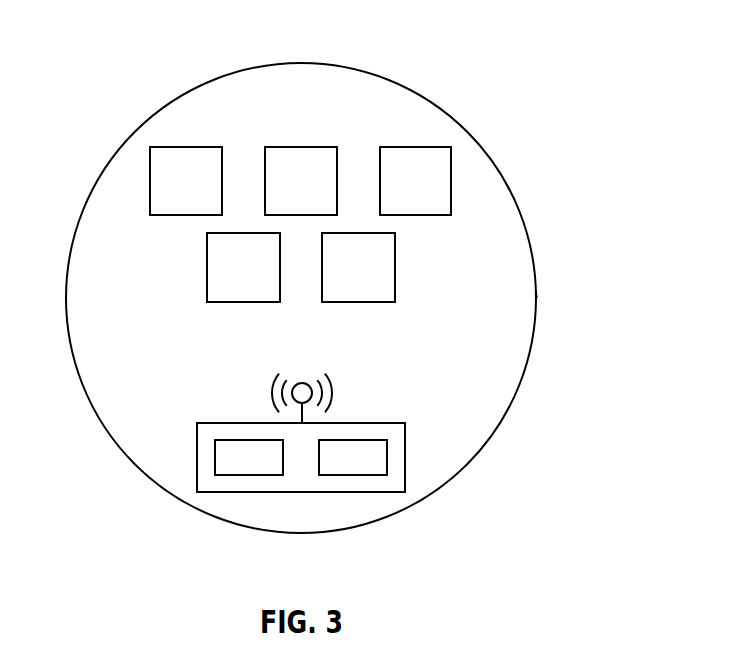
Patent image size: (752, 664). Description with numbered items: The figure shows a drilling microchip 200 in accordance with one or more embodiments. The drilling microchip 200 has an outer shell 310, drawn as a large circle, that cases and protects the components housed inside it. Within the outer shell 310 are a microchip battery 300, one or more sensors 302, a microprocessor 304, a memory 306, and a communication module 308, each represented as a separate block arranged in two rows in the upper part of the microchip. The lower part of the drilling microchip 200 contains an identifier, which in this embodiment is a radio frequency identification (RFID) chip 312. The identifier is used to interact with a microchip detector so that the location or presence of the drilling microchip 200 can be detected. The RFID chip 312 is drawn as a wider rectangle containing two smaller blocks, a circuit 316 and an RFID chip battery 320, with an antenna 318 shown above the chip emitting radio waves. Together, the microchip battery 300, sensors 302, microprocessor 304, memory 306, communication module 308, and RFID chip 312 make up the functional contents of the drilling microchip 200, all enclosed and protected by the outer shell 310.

The drilling microchip 200 is at (537, 298).
The microchip battery 300 is at (150, 190).
The sensors 302 is at (207, 268).
The microprocessor 304 is at (289, 147).
The memory 306 is at (451, 180).
The communication module 308 is at (395, 280).
The outer shell 310 is at (222, 75).
The RFID chip 312 is at (383, 423).
The circuit 316 is at (247, 475).
The antenna 318 is at (325, 385).
The RFID chip battery 320 is at (347, 475).